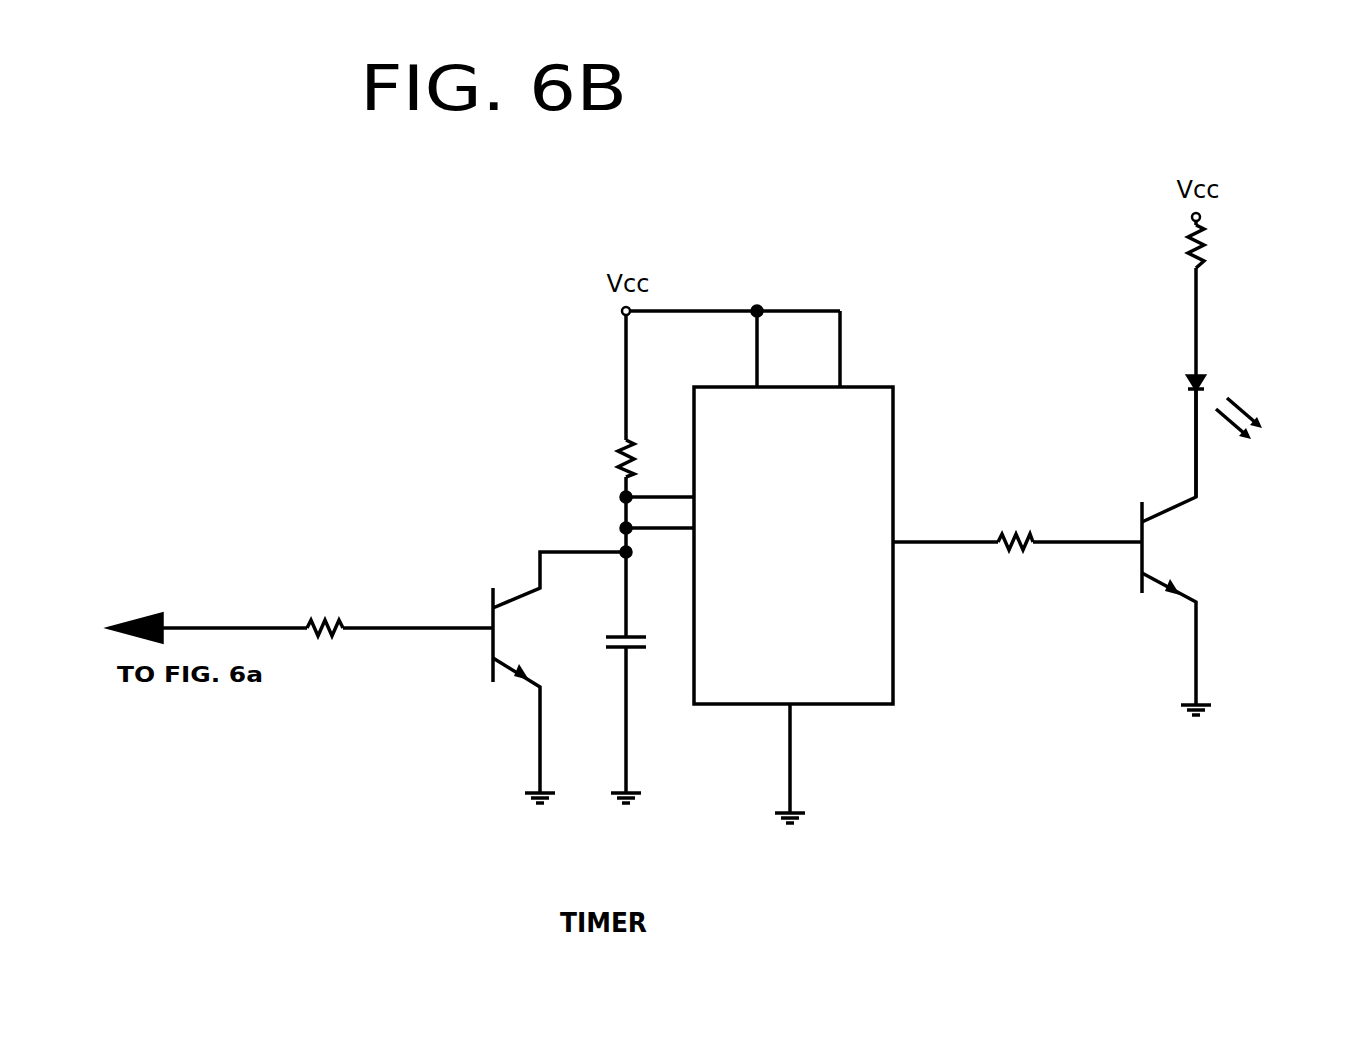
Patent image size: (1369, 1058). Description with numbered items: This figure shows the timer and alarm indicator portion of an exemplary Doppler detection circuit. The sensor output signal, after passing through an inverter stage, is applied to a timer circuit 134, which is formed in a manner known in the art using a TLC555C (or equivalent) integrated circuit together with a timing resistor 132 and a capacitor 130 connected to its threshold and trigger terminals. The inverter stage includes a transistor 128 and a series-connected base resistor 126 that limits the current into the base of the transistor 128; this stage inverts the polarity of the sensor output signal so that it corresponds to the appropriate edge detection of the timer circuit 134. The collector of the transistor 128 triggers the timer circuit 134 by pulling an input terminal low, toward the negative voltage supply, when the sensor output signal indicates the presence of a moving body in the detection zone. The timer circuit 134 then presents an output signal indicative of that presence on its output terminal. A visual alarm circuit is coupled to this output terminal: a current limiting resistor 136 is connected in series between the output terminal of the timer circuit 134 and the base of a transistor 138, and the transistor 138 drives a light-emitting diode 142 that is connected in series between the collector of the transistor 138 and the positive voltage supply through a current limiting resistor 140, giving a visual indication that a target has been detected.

The base resistor 126 is at (322, 620).
The transistor 128 is at (491, 652).
The capacitor 130 is at (628, 650).
The timing resistor 132 is at (626, 447).
The timer circuit 134 is at (888, 433).
The current limiting resistor 136 is at (1015, 548).
The transistor 138 is at (1140, 508).
The current limiting resistor 140 is at (1205, 257).
The light-emitting diode 142 is at (1210, 385).